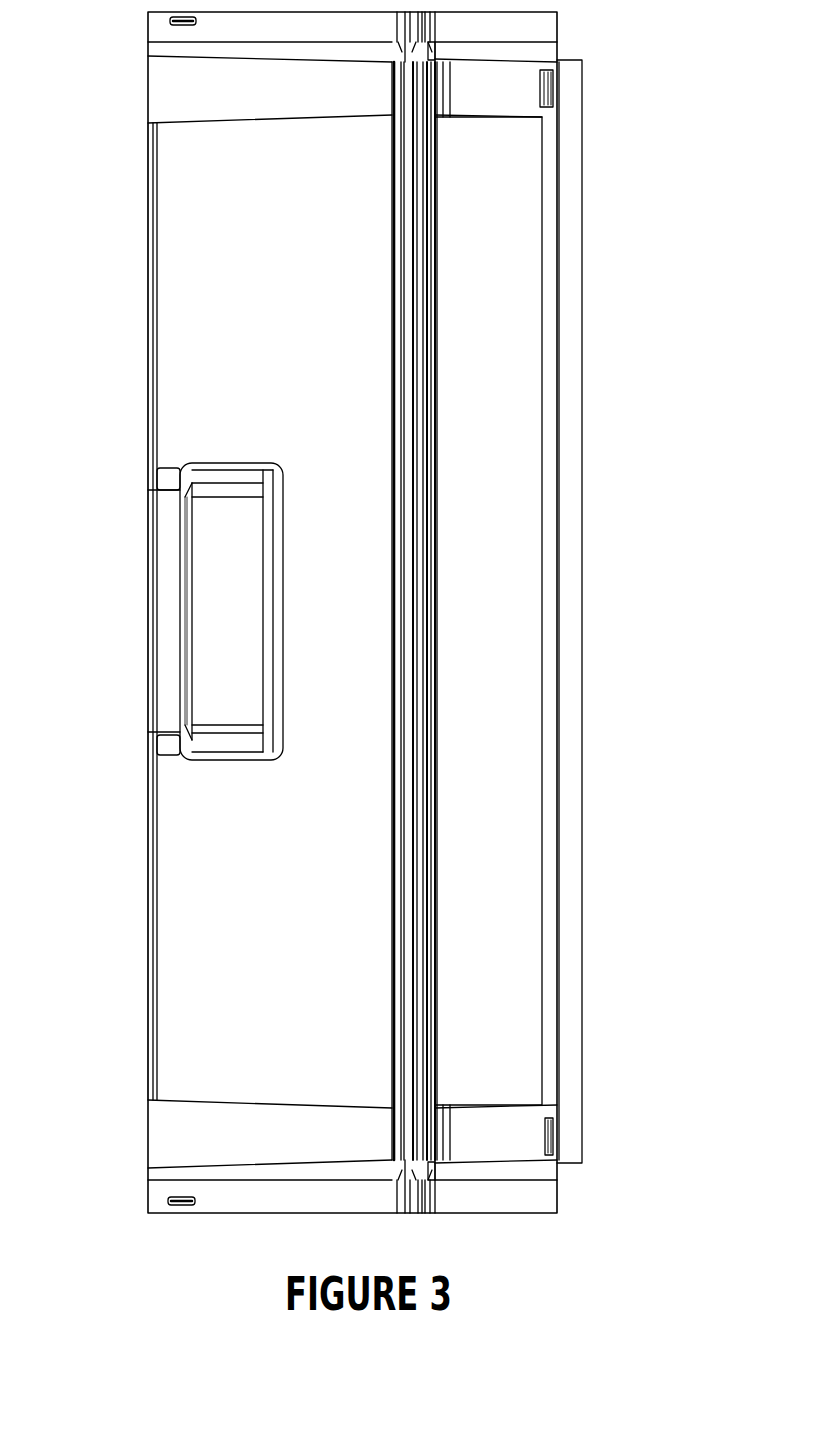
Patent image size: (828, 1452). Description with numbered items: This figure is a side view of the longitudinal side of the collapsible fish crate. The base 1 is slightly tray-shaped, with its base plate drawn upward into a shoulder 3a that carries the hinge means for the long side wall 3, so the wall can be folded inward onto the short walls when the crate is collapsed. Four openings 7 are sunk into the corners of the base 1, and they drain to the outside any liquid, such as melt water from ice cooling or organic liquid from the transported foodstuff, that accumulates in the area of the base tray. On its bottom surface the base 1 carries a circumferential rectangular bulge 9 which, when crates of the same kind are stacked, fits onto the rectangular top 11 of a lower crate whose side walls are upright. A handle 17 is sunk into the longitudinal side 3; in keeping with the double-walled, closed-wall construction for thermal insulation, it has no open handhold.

The base 1 is at (552, 413).
The long side wall 3 is at (177, 305).
The shoulder 3a is at (515, 293).
The opening 7 is at (550, 83).
The circumferential rectangular bulge 9 is at (565, 665).
The rectangular top 11 is at (153, 952).
The handle 17 is at (212, 590).